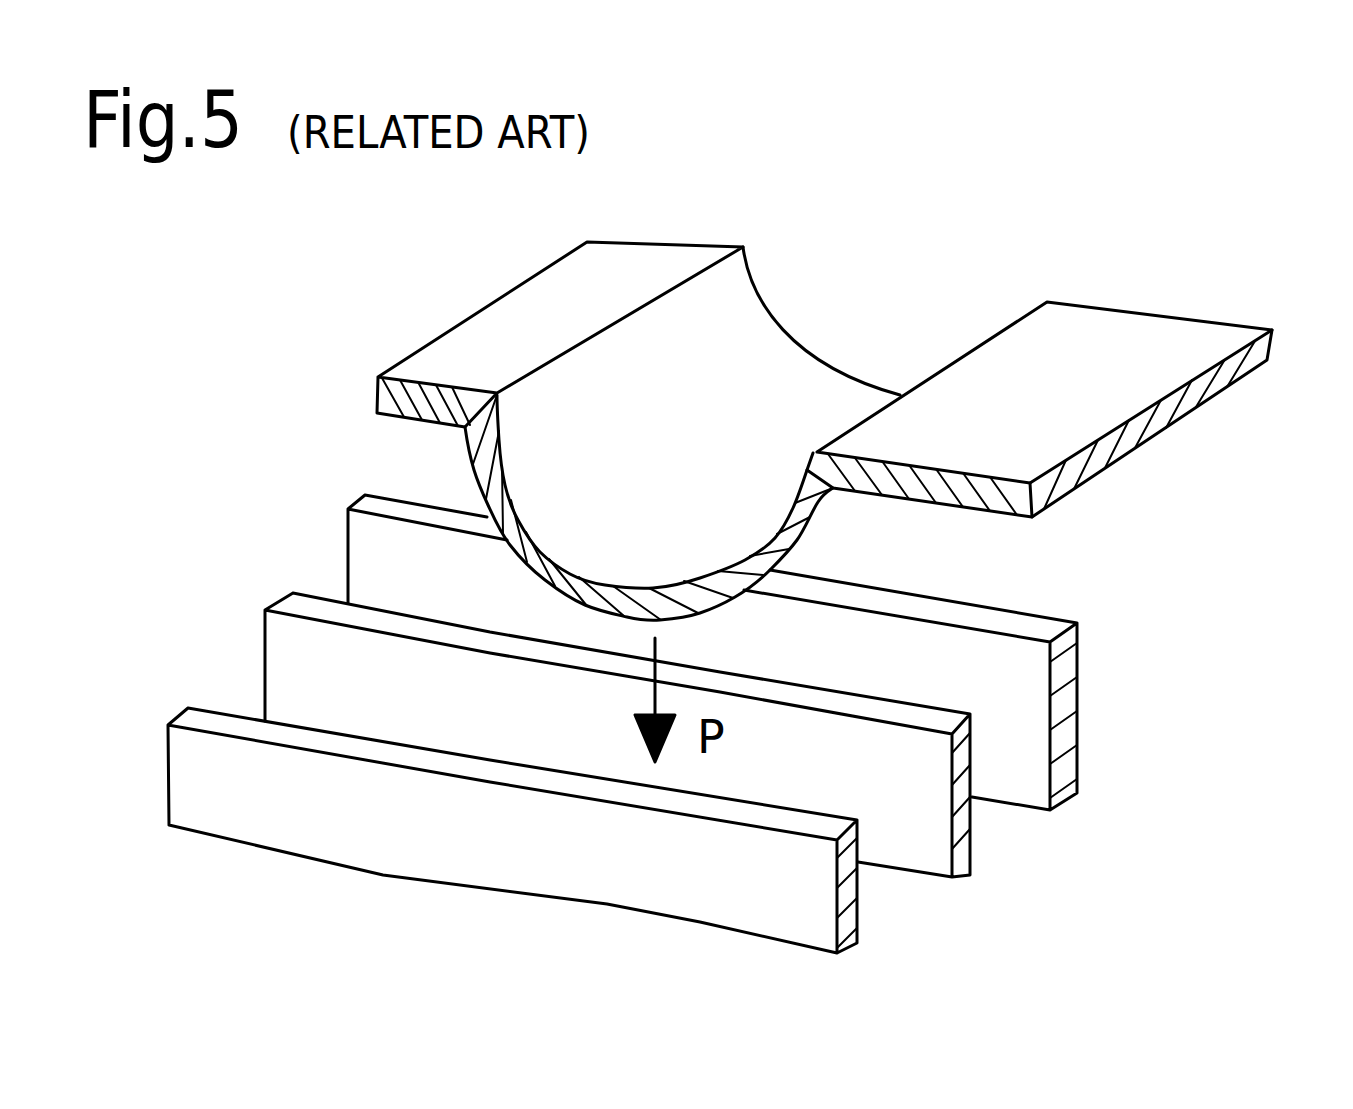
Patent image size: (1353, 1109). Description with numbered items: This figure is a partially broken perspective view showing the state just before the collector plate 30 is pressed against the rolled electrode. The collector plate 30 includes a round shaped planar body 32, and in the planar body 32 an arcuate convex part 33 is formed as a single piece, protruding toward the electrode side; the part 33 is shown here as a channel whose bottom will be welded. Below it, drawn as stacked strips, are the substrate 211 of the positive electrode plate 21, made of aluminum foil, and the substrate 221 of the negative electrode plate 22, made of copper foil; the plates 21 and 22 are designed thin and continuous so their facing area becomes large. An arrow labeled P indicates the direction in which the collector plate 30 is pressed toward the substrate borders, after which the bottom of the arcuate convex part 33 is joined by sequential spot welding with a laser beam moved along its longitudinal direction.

The collector plate 30 is at (378, 318).
The arcuate convex part 33 is at (780, 430).
The planar body 32 is at (1165, 347).
The positive electrode plate 21 is at (739, 725).
The negative electrode plate 22 is at (739, 725).
The substrate 211 is at (739, 725).
The substrate 221 is at (770, 885).